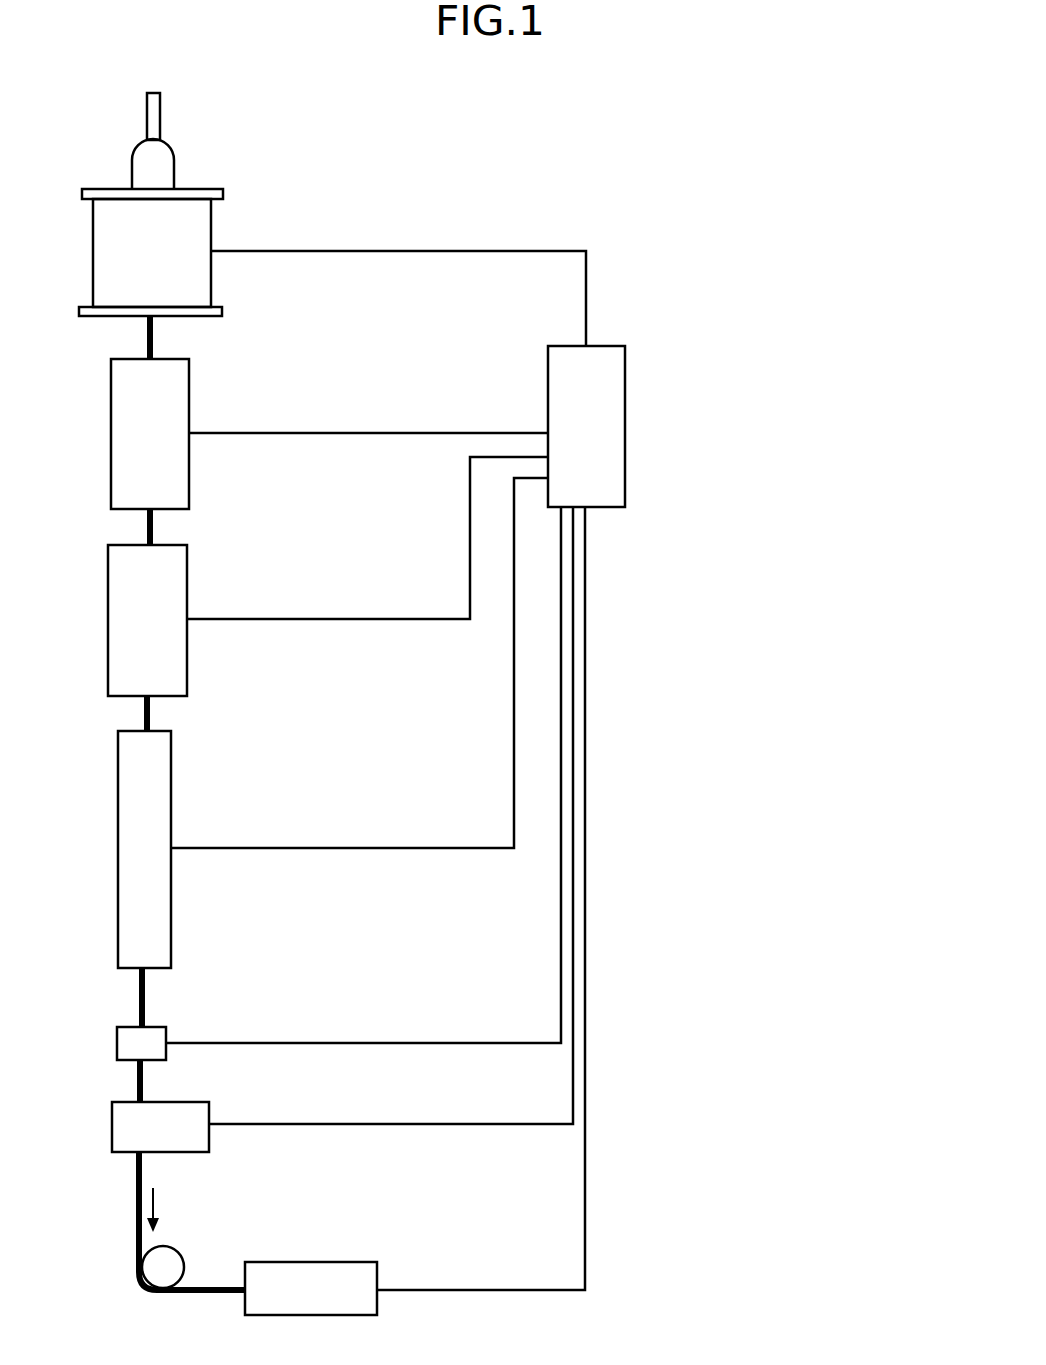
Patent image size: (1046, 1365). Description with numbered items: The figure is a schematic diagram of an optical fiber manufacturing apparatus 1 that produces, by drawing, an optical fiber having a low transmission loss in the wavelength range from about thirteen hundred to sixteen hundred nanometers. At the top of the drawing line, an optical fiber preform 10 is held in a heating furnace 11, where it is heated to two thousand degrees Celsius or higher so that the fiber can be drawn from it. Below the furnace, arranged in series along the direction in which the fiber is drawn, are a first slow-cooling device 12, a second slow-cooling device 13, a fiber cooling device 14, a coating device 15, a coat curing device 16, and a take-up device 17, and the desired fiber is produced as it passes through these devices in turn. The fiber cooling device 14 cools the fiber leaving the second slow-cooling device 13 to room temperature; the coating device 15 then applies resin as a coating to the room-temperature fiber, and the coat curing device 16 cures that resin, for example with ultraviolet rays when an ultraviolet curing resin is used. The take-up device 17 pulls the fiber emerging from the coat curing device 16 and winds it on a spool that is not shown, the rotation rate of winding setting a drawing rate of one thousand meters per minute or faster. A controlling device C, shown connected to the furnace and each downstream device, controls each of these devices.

The optical fiber manufacturing apparatus 1 is at (576, 200).
The optical fiber preform 10 is at (174, 157).
The heating furnace 11 is at (211, 222).
The first slow-cooling device 12 is at (189, 417).
The second slow-cooling device 13 is at (187, 568).
The fiber cooling device 14 is at (173, 782).
The coating device 15 is at (166, 1035).
The coat curing device 16 is at (209, 1115).
The take-up device 17 is at (330, 1262).
The controlling device C is at (625, 382).